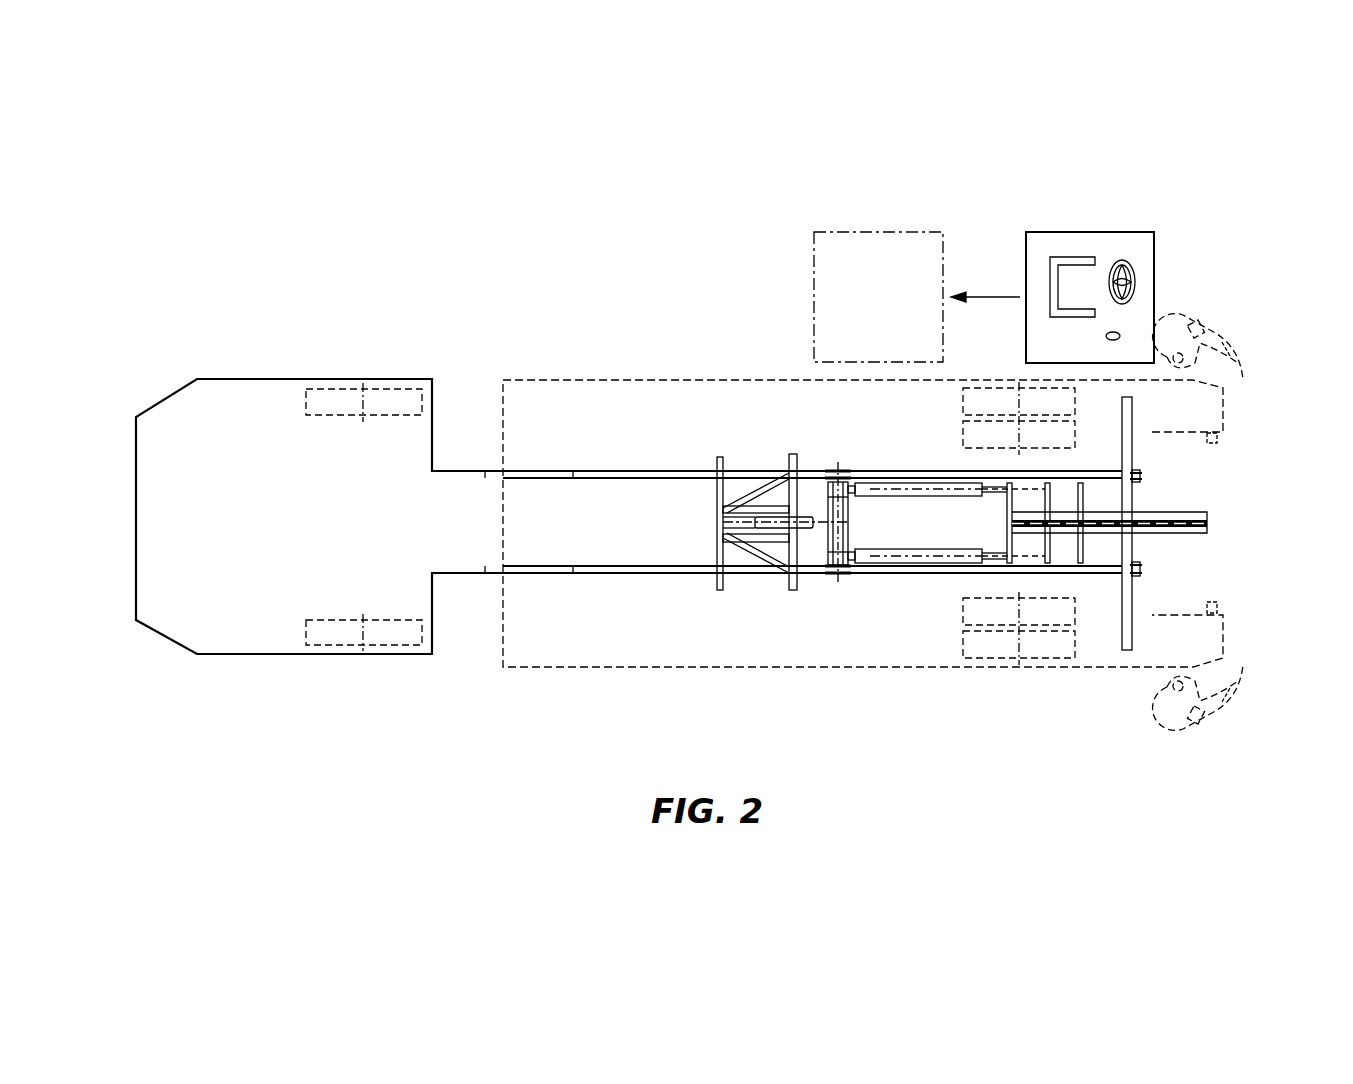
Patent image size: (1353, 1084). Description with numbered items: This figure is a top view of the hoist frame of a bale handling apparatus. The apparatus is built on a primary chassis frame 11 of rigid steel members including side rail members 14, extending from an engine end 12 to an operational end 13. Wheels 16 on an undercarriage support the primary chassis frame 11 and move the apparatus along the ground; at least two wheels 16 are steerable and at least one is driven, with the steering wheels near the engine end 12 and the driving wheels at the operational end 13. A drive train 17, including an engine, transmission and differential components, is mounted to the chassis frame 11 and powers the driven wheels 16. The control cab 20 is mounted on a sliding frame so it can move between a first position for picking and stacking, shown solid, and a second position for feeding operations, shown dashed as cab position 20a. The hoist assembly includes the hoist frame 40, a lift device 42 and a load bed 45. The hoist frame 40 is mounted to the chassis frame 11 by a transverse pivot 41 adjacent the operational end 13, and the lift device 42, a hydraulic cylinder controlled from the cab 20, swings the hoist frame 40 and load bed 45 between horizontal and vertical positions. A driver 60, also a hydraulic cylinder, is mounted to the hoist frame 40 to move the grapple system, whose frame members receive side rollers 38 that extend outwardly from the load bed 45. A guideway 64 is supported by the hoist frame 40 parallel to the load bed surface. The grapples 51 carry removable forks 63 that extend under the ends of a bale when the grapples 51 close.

The engine end 12 is at (121, 529).
The operational end 13 is at (1248, 520).
The drive train 17 is at (177, 415).
The wheels 16 is at (345, 400).
The primary chassis frame 11 is at (457, 473).
The side rail members 14 is at (475, 468).
The load bed 45 is at (573, 378).
The hoist frame 40 is at (659, 470).
The driver 60 is at (762, 520).
The lift device 42 is at (873, 487).
The guideway 64 is at (1207, 533).
The pivot 41 is at (1140, 566).
The side rollers 38 is at (1217, 440).
The grapples 51 is at (1200, 322).
The removable forks 63 is at (1238, 352).
The control cab 20 is at (1127, 232).
The control cab second position 20a is at (943, 232).